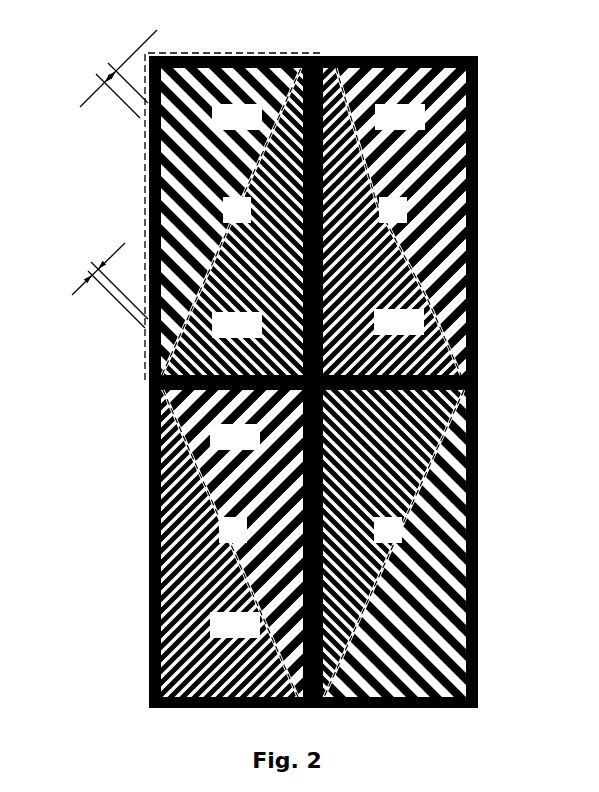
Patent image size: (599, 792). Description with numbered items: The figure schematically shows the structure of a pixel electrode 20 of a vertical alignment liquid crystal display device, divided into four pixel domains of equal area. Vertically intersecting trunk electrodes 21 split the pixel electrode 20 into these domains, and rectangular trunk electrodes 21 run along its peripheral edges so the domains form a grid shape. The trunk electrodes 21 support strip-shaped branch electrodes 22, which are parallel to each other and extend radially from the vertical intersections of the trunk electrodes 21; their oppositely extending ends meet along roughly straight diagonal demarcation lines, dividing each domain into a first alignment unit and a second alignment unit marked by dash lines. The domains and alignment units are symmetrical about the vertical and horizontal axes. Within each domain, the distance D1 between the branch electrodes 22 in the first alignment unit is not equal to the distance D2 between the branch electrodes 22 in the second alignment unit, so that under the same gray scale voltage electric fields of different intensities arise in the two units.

The pixel electrode 20 is at (42, 49).
The trunk electrodes 21 is at (431, 55).
The branch electrodes 22 is at (478, 205).
The distance between branch electrodes in the first alignment unit D1 is at (103, 285).
The distance between branch electrodes in the second alignment unit D2 is at (138, 66).